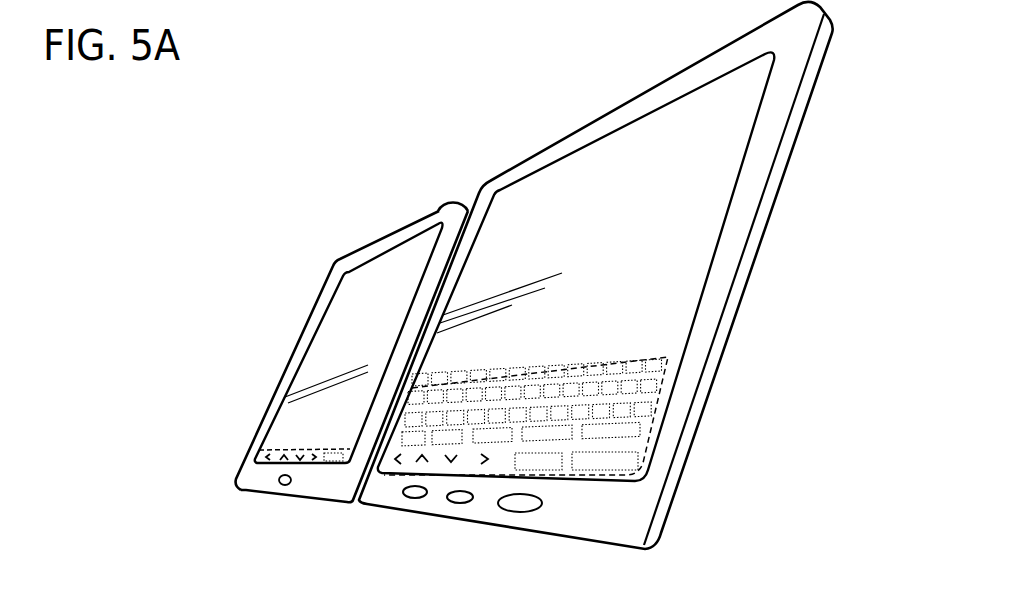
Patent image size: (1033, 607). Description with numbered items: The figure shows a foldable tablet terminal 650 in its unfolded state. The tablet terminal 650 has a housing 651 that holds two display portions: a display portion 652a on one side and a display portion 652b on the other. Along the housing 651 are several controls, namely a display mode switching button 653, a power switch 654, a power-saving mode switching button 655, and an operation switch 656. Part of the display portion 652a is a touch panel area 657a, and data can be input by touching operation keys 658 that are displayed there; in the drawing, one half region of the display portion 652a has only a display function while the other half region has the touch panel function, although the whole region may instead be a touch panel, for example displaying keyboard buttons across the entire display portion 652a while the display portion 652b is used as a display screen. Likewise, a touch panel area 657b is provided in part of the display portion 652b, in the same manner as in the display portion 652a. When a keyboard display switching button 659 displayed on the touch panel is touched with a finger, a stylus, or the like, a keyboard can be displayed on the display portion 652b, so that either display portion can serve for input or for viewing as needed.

The tablet terminal 650 is at (262, 253).
The housing 651 is at (440, 207).
The display portion 652a is at (602, 163).
The display portion 652b is at (365, 280).
The display mode switching button 653 is at (405, 495).
The power switch 654 is at (450, 502).
The power-saving mode switching button 655 is at (515, 506).
The operation switch 656 is at (280, 486).
The touch panel area 657a is at (654, 421).
The touch panel area 657b is at (268, 452).
The operation keys 658 is at (270, 457).
The keyboard display switching button 659 is at (312, 464).